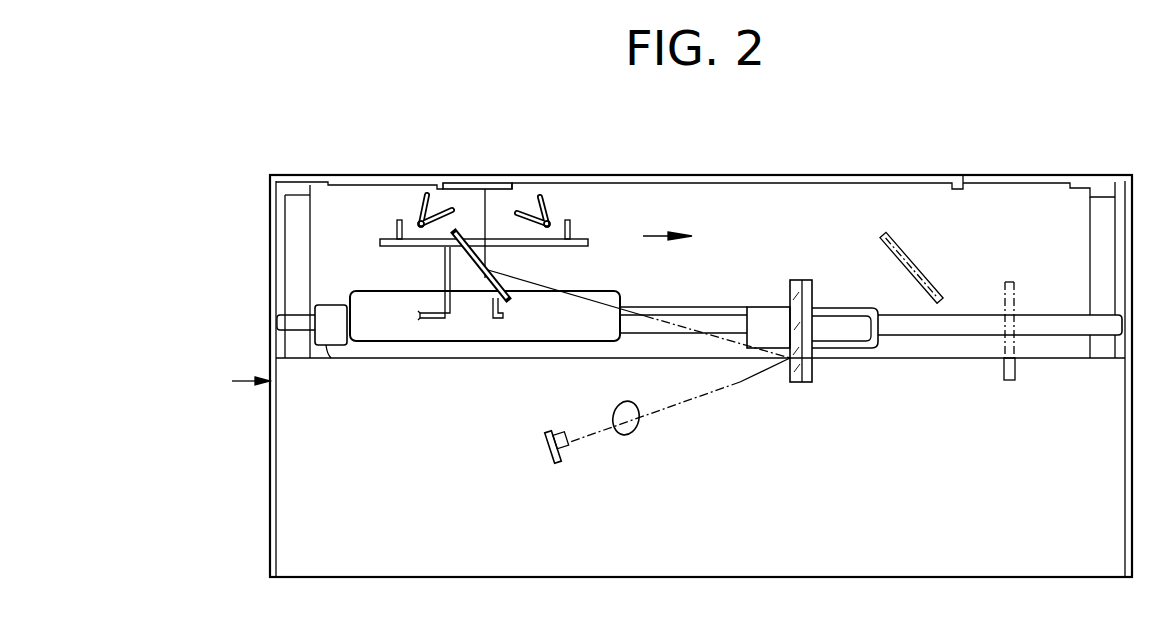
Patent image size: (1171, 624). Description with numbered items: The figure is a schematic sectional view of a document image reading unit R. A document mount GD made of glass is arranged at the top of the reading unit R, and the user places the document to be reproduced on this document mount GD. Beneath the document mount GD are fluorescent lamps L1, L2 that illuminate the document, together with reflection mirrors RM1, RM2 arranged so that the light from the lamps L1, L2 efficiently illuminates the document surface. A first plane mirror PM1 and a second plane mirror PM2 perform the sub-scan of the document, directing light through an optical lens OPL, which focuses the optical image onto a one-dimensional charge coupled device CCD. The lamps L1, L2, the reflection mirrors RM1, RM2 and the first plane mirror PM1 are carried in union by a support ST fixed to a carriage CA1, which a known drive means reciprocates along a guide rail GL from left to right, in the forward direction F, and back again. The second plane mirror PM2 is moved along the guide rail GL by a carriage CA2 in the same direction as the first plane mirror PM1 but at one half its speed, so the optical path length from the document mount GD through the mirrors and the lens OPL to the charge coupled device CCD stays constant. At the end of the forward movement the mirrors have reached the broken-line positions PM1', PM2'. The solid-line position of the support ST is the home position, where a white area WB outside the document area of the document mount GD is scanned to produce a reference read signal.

The document mount GD is at (538, 176).
The reflection mirror RM1 is at (417, 204).
The reflection mirror RM2 is at (558, 199).
The fluorescent lamp L1 is at (437, 210).
The fluorescent lamp L2 is at (557, 217).
The white area WB is at (503, 189).
The carriage CA1 is at (602, 290).
The carriage CA2 is at (763, 307).
The first plane mirror PM1 is at (512, 265).
The second plane mirror PM2 is at (796, 303).
The position of first plane mirror at end of forward movement PM1' is at (931, 263).
The position of second plane mirror at end of forward movement PM2' is at (1022, 304).
The guide rail GL is at (688, 318).
The support ST is at (445, 276).
The scanning direction F is at (674, 236).
The document image reading unit R is at (241, 383).
The optical lens OPL is at (633, 435).
The charge coupled device CCD is at (560, 463).